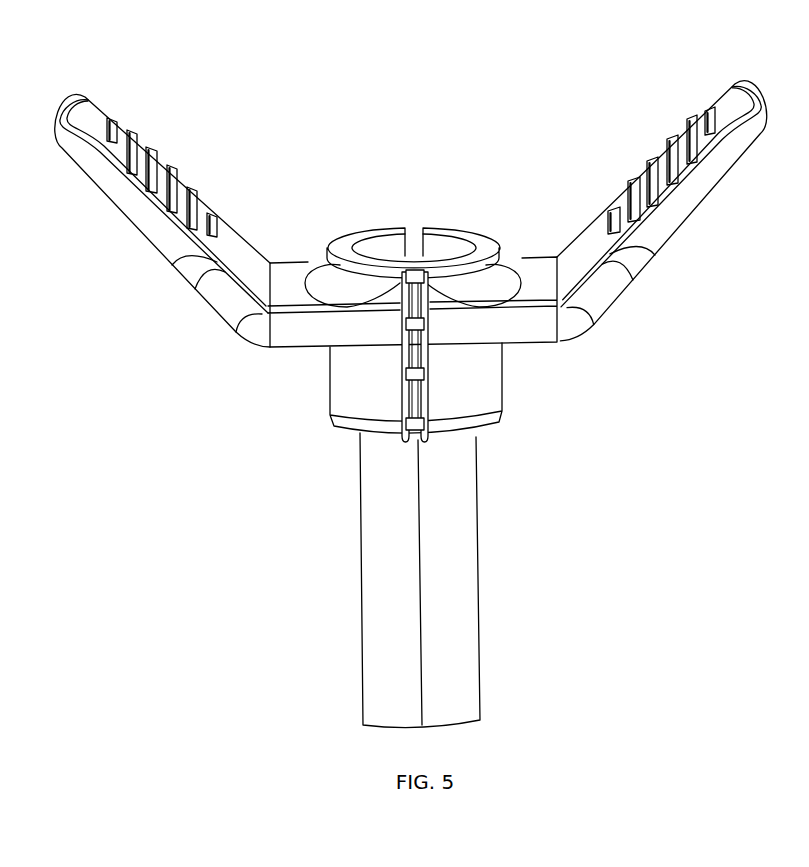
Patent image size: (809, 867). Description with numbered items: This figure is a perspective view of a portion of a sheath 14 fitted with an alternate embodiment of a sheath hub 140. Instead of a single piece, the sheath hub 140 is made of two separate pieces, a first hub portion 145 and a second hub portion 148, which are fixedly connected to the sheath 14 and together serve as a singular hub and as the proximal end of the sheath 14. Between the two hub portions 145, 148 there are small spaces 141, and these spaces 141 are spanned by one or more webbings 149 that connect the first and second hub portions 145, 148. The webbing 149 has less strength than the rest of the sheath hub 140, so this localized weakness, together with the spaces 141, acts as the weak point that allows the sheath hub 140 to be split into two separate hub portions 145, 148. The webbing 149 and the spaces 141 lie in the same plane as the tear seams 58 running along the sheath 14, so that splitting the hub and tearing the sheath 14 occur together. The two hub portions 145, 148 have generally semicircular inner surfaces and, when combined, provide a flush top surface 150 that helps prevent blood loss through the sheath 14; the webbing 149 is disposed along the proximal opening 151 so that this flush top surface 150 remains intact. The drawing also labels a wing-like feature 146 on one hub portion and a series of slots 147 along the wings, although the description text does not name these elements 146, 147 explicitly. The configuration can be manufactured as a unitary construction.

The sheath 14 is at (422, 580).
The tear seams 58 is at (418, 620).
The sheath hub 140 is at (415, 278).
The spaces 141 is at (424, 394).
The first hub portion 145 is at (277, 350).
The right wing 146 is at (693, 243).
The vent slots 147 is at (113, 117).
The second hub portion 148 is at (552, 345).
The webbing 149 is at (403, 338).
The flush top surface 150 is at (458, 233).
The proximal opening 151 is at (372, 233).